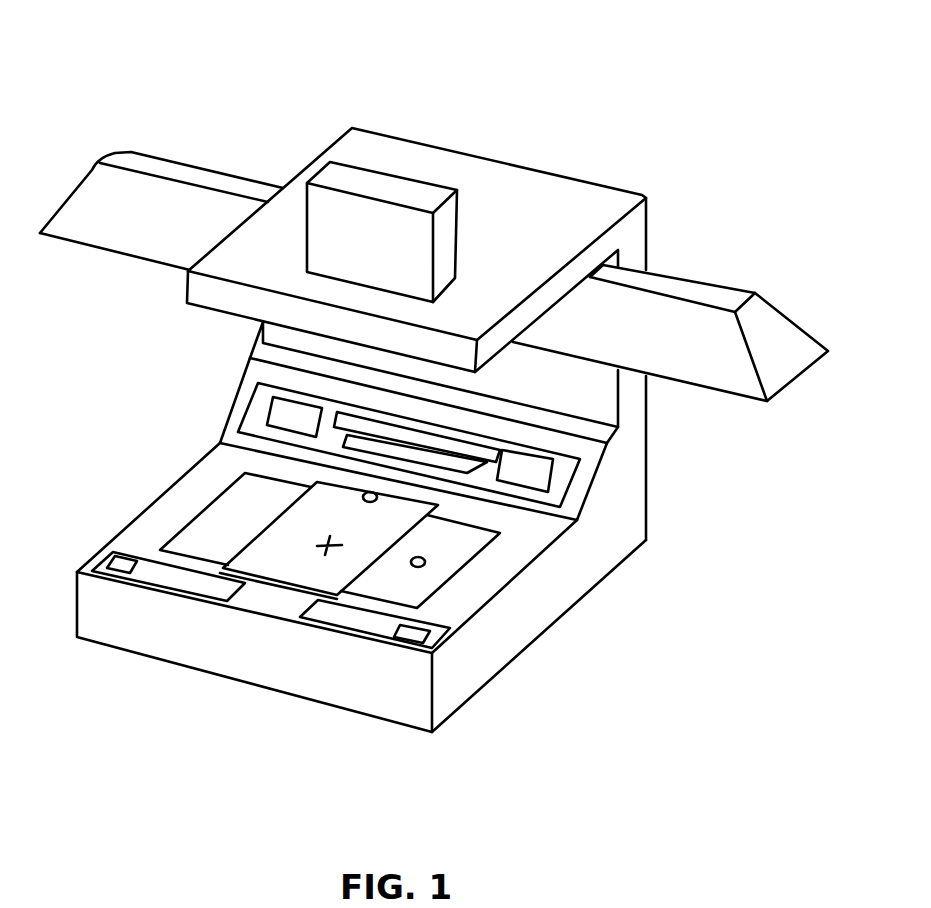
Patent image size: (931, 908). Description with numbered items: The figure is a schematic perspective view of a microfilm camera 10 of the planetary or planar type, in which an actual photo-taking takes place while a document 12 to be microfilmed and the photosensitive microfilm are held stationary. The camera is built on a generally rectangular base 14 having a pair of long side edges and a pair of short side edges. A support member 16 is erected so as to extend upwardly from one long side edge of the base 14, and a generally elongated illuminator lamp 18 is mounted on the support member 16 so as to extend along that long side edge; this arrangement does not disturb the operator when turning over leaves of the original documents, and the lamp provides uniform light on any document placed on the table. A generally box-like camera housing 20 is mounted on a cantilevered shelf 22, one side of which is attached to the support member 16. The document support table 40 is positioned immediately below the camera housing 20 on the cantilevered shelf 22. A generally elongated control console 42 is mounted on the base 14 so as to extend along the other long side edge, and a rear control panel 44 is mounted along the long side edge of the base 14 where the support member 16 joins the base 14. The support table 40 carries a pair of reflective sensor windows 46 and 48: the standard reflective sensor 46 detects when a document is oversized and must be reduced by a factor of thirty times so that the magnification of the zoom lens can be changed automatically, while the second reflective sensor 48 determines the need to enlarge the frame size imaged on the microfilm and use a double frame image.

The microfilm camera 10 is at (306, 119).
The document 12 is at (315, 577).
The base 14 is at (520, 620).
The support member 16 is at (630, 398).
The illuminator lamp 18 is at (625, 338).
The camera housing 20 is at (350, 247).
The cantilevered shelf 22 is at (500, 240).
The document support table 40 is at (213, 523).
The control console 42 is at (158, 568).
The rear control panel 44 is at (220, 392).
The reflective sensor 46 is at (366, 493).
The second reflective sensor 48 is at (425, 565).